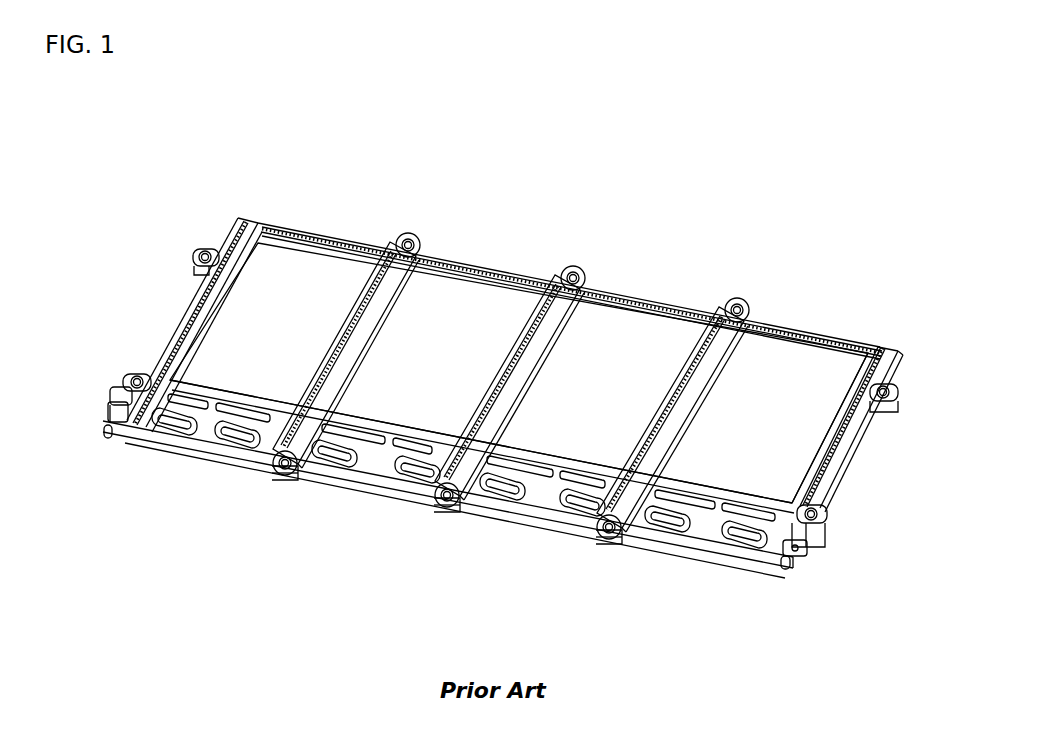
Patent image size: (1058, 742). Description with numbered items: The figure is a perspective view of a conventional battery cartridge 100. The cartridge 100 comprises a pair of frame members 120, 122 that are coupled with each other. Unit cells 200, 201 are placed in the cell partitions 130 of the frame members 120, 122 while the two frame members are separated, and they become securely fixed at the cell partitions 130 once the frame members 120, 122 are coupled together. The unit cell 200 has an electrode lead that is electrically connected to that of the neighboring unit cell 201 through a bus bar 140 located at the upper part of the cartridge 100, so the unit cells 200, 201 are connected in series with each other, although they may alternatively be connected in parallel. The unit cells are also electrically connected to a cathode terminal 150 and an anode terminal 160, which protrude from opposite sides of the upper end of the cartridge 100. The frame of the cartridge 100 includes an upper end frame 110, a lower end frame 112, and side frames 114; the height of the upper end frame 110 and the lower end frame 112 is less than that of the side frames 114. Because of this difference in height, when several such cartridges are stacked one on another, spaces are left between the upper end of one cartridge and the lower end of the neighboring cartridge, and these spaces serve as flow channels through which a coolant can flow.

The cartridge 100 is at (220, 186).
The upper end frame 110 is at (677, 550).
The lower end frame 112 is at (328, 239).
The side frames 114 is at (538, 293).
The frame member 120 is at (427, 502).
The frame member 122 is at (457, 512).
The cell partitions 130 is at (610, 302).
The bus bar 140 is at (313, 470).
The cathode terminal 150 is at (783, 570).
The anode terminal 160 is at (107, 437).
The unit cell 200 is at (810, 360).
The unit cell 201 is at (657, 333).